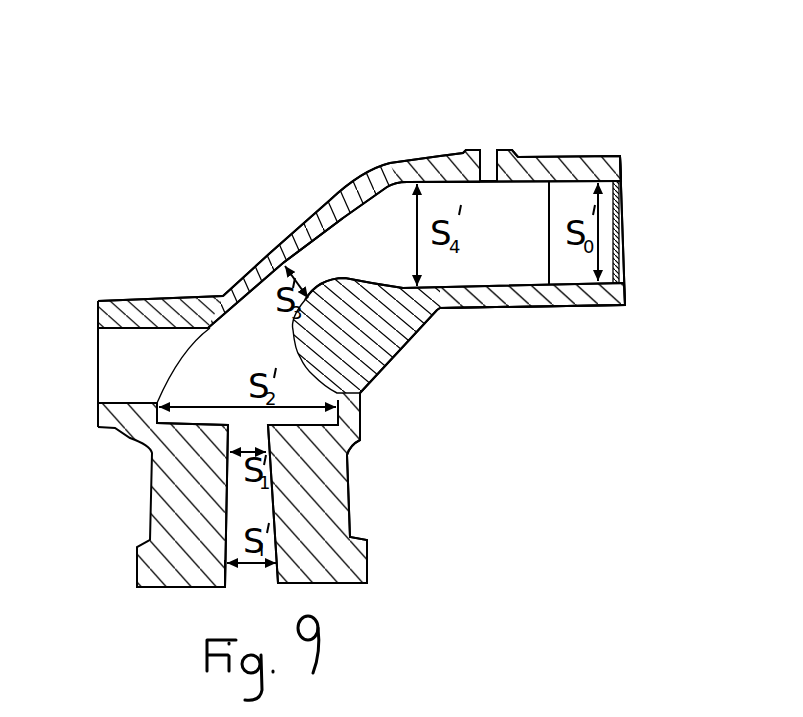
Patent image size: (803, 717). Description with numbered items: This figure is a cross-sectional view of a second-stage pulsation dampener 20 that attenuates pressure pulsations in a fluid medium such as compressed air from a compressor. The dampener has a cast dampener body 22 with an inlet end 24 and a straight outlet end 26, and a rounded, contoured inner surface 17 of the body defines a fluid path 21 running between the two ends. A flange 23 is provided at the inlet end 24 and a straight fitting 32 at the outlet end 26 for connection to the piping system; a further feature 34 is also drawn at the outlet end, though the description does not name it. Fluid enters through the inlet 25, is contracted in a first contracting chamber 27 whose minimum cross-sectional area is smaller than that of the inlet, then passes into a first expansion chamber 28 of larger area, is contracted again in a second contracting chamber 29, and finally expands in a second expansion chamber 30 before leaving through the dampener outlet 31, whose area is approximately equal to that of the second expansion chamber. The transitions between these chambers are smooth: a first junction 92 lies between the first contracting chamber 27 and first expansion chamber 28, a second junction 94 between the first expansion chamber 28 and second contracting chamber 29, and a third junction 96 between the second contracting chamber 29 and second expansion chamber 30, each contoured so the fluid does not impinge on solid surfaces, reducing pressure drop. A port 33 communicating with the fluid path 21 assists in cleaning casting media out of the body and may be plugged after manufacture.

The pulsation dampener 20 is at (158, 95).
The port 33 is at (113, 327).
The first expansion chamber 28 is at (220, 355).
The second junction 94 is at (247, 293).
The second contracting chamber 29 is at (290, 253).
The third junction 96 is at (320, 227).
The inner surface 17 is at (343, 220).
The second expansion chamber 30 is at (428, 180).
The groove 34 is at (497, 180).
The straight fitting 32 is at (679, 113).
The dampener outlet 31 is at (613, 192).
The fluid path 21 is at (616, 238).
The outlet end 26 is at (625, 305).
The dampener body 22 is at (387, 347).
The first contracting chamber 27 is at (273, 443).
The first junction 92 is at (228, 425).
The flange 23 is at (432, 532).
The inlet end 24 is at (340, 573).
The inlet 25 is at (236, 575).